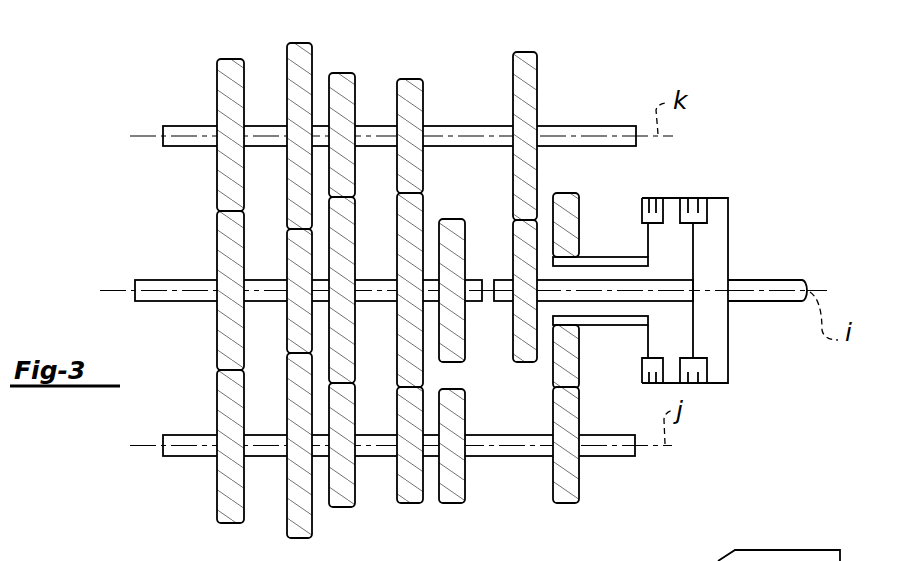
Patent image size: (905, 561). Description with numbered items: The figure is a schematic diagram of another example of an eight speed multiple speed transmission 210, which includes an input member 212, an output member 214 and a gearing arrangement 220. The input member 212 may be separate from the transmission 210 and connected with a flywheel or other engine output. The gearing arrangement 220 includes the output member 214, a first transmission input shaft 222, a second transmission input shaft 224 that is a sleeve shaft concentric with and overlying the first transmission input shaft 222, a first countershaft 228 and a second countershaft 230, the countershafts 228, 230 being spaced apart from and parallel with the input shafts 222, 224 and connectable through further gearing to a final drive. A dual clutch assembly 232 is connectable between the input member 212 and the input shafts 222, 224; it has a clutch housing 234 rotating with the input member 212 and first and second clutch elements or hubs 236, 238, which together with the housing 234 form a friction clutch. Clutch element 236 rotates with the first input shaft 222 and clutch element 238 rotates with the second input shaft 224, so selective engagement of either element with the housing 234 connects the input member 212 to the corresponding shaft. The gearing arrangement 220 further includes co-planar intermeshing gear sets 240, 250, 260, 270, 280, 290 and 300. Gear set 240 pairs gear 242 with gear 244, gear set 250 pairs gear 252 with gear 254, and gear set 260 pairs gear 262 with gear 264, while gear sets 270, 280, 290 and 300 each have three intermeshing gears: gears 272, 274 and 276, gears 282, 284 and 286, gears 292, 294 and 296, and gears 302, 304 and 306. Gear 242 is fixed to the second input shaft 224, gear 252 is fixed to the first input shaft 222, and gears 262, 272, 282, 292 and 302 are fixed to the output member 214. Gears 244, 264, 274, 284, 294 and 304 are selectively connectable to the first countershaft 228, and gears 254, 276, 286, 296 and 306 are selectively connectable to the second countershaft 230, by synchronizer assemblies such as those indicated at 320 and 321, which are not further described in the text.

The multiple speed transmission 210 is at (650, 58).
The input member 212 is at (802, 279).
The output member 214 is at (150, 278).
The gearing arrangement 220 is at (93, 162).
The first transmission input shaft 222 is at (609, 279).
The second transmission input shaft 224 is at (606, 326).
The first countershaft 228 is at (614, 457).
The second countershaft 230 is at (598, 126).
The dual clutch assembly 232 is at (724, 172).
The clutch housing 234 is at (728, 212).
The first clutch element 236 is at (693, 250).
The second clutch element 238 is at (648, 337).
The co-planar gear set 240 is at (566, 508).
The gear 242 is at (580, 204).
The gear 244 is at (580, 400).
The co-planar gear set 250 is at (526, 50).
The gear 252 is at (527, 364).
The gear 254 is at (537, 72).
The co-planar gear set 260 is at (451, 508).
The gear 262 is at (465, 233).
The gear 264 is at (465, 470).
The co-planar gear set 270 is at (411, 77).
The gear 272 is at (397, 233).
The gear 274 is at (400, 478).
The gear 276 is at (423, 95).
The co-planar gear set 280 is at (339, 70).
The gear 282 is at (355, 340).
The gear 284 is at (338, 508).
The gear 286 is at (355, 92).
The co-planar gear set 290 is at (300, 41).
The gear 292 is at (287, 250).
The gear 294 is at (287, 530).
The gear 296 is at (287, 93).
The co-planar gear set 300 is at (230, 57).
The gear 302 is at (217, 232).
The gear 304 is at (217, 498).
The gear 306 is at (217, 85).
The synchronizer 320 is at (142, 554).
The synchronizer 321 is at (688, 560).